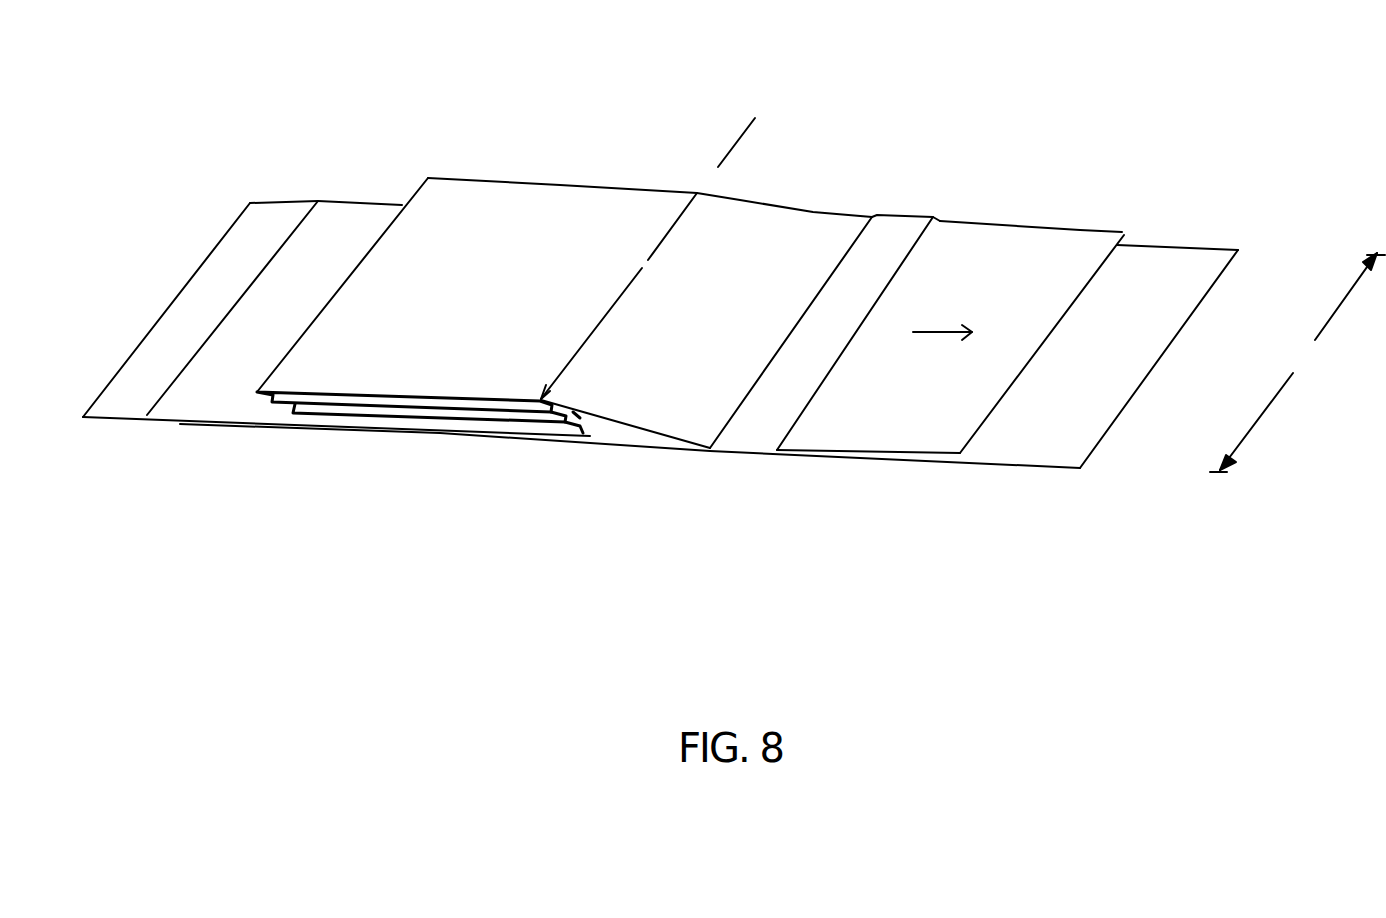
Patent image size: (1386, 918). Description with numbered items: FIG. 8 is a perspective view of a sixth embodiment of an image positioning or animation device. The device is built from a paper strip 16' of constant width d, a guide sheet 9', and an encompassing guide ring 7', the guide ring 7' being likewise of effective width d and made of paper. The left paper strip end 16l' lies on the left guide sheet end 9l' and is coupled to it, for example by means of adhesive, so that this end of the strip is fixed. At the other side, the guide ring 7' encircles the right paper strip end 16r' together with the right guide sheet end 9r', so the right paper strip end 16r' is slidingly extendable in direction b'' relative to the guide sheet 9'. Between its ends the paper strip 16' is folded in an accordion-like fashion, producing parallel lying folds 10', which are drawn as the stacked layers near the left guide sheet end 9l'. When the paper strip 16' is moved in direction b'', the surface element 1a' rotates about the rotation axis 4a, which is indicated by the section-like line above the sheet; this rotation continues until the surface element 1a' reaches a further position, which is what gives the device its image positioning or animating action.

The surface element 1a' is at (564, 217).
The left guide sheet end 9l' is at (200, 286).
The left paper strip end 16l' is at (274, 263).
The paper strip 16' is at (625, 465).
The guide ring 7' is at (825, 381).
The right paper strip end 16r' is at (949, 287).
The right guide sheet end 9r' is at (1099, 368).
The guide sheet 9' is at (581, 515).
The folds 10' is at (429, 488).
The rotation axis 4a is at (777, 92).
The direction b'' is at (965, 333).
The width d is at (1297, 362).